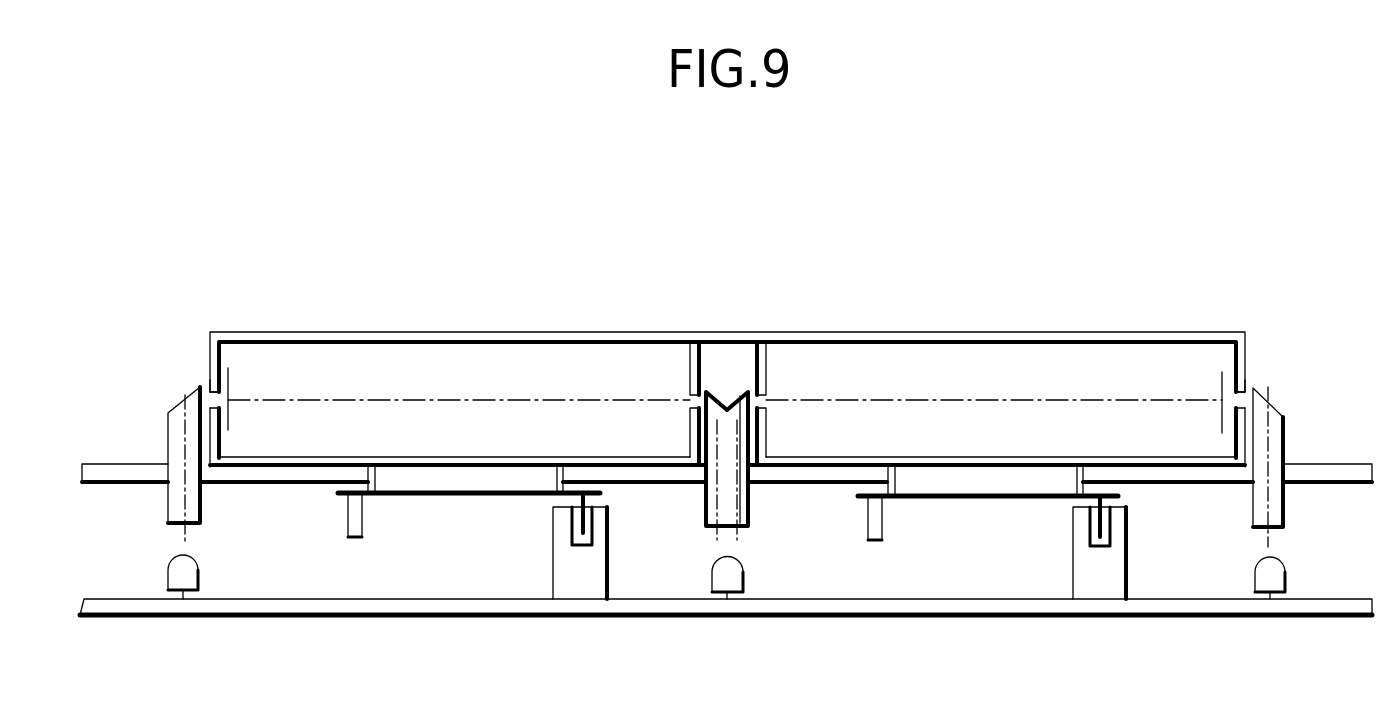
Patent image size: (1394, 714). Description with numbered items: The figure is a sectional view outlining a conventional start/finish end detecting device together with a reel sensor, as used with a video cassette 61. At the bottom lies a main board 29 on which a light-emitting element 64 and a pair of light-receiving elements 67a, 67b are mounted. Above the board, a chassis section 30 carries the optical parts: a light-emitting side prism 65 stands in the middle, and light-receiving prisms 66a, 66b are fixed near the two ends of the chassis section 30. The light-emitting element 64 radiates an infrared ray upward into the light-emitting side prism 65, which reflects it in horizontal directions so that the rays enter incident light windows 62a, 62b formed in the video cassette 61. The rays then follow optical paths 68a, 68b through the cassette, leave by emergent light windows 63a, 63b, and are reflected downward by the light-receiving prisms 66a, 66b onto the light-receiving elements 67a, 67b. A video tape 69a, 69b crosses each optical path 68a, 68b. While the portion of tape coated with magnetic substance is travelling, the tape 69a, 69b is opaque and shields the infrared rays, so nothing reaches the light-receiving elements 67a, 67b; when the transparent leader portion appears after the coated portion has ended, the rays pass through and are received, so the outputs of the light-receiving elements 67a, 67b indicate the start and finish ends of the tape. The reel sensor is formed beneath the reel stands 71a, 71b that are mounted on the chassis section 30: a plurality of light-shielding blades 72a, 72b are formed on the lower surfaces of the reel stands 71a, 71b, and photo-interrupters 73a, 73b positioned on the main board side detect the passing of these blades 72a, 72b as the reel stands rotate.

The main board 29 is at (108, 617).
The chassis section 30 is at (110, 484).
The video cassette 61 is at (463, 332).
The incident light window 62a is at (692, 400).
The incident light window 62b is at (765, 400).
The emergent light window 63a is at (222, 400).
The emergent light window 63b is at (1235, 405).
The light-emitting element 64 is at (713, 577).
The light-emitting side prism 65 is at (724, 507).
The light-receiving prism 66a is at (168, 437).
The light-receiving prism 66b is at (1285, 437).
The light-receiving element 67a is at (200, 578).
The light-receiving element 67b is at (1256, 578).
The optical path 68a is at (402, 400).
The optical path 68b is at (1020, 400).
The video tape 69a is at (212, 378).
The video tape 69b is at (1245, 380).
The reel stand 71a is at (451, 496).
The reel stand 71b is at (971, 499).
The light-shielding blade 72a is at (577, 522).
The light-shielding blade 72b is at (1095, 522).
The photo-interrupter 73a is at (583, 578).
The photo-interrupter 73b is at (1100, 578).